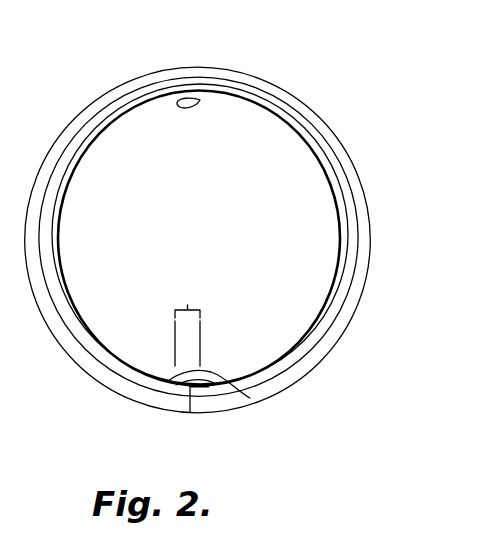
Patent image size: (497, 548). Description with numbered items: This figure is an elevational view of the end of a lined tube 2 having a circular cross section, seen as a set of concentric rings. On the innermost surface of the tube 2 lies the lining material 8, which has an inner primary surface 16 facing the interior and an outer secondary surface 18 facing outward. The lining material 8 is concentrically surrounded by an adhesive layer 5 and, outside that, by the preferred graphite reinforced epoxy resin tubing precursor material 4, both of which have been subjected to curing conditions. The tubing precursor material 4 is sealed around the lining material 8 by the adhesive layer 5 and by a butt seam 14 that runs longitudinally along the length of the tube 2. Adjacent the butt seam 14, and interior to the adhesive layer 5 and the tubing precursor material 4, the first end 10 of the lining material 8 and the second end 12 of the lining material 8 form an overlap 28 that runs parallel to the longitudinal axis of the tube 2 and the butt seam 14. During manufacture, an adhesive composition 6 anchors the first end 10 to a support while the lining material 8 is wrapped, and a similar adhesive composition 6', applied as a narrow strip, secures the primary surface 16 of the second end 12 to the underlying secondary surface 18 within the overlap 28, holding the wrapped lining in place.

The tube 2 is at (338, 113).
The tubing precursor material 4 is at (358, 283).
The adhesive layer 5 is at (318, 332).
The lining material 8 is at (333, 200).
The inner primary surface 16 is at (200, 100).
The outer secondary surface 18 is at (243, 97).
The overlap 28 is at (188, 322).
The second end 12 is at (215, 390).
The butt seam 14 is at (194, 392).
The adhesive composition 6 is at (268, 406).
The adhesive composition 6' is at (156, 424).
The first end 10 is at (178, 376).